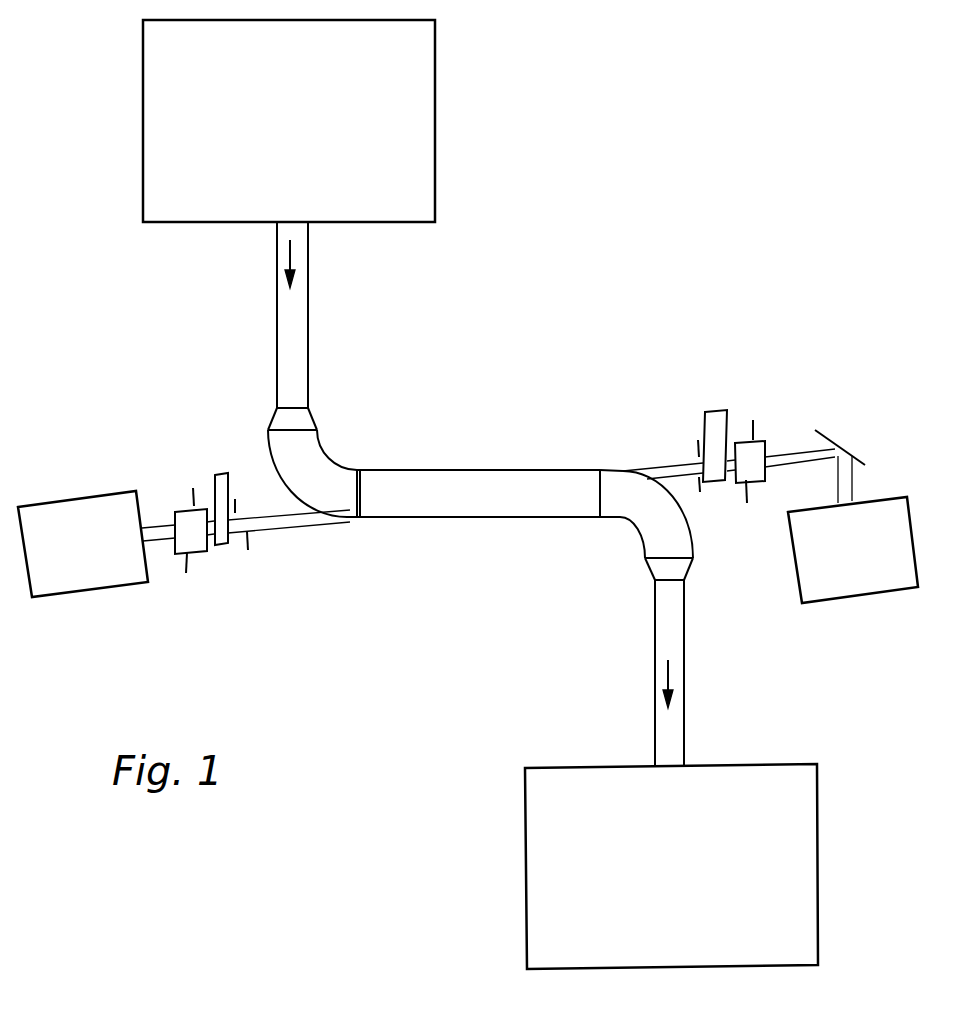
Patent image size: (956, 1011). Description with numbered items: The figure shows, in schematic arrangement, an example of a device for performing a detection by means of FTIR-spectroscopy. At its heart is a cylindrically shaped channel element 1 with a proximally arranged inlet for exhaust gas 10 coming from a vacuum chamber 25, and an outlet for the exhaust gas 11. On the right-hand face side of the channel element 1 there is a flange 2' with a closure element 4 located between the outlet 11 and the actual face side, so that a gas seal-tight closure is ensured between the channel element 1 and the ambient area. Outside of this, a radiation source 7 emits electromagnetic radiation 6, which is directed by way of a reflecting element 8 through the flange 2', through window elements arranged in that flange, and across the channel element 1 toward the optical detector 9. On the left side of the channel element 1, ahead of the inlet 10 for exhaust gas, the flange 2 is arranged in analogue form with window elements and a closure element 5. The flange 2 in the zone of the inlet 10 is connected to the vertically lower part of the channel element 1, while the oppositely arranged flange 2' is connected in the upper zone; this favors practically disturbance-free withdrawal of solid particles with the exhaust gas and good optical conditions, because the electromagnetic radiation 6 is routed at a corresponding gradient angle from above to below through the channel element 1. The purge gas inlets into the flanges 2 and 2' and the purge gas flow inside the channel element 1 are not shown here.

The channel element 1 is at (500, 535).
The flange 2 is at (246, 551).
The flange 2' is at (729, 441).
The closure element 4 is at (726, 412).
The closure element 5 is at (226, 548).
The electromagnetic radiation 6 is at (778, 455).
The radiation source 7 is at (853, 550).
The reflecting element 8 is at (850, 442).
The detector 9 is at (83, 544).
The inlet for exhaust gas 10 is at (268, 431).
The outlet for exhaust gas 11 is at (632, 532).
The vacuum chamber 25 is at (289, 121).